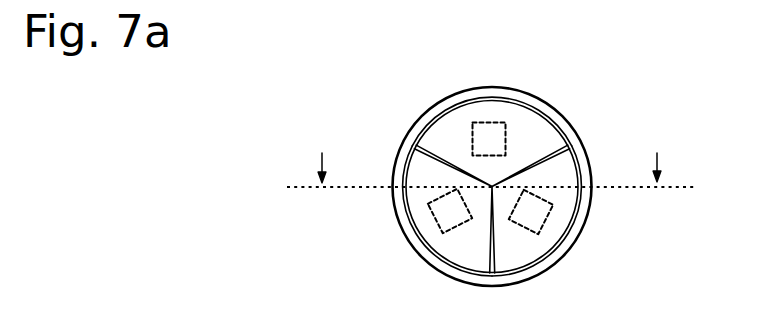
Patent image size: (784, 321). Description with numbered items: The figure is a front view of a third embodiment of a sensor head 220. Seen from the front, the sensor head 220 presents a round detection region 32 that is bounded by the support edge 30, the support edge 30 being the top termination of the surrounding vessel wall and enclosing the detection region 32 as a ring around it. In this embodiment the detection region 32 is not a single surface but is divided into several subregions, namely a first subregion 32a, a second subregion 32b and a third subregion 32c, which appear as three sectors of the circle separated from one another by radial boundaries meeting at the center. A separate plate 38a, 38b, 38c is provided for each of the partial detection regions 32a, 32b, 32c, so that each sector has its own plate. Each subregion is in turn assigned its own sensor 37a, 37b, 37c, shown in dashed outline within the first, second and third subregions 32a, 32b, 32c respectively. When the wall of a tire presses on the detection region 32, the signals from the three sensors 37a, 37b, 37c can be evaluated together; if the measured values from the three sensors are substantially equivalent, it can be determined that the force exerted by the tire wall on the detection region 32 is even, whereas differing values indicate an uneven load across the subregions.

The sensor head 220 is at (574, 86).
The detection region 32 is at (400, 129).
The support edge 30 is at (576, 148).
The first subregion 32a is at (437, 110).
The second subregion 32b is at (577, 226).
The third subregion 32c is at (427, 249).
The plate 38a is at (453, 124).
The plate 38b is at (533, 249).
The plate 38c is at (466, 252).
The sensor 37a is at (490, 133).
The sensor 37b is at (537, 213).
The sensor 37c is at (447, 213).